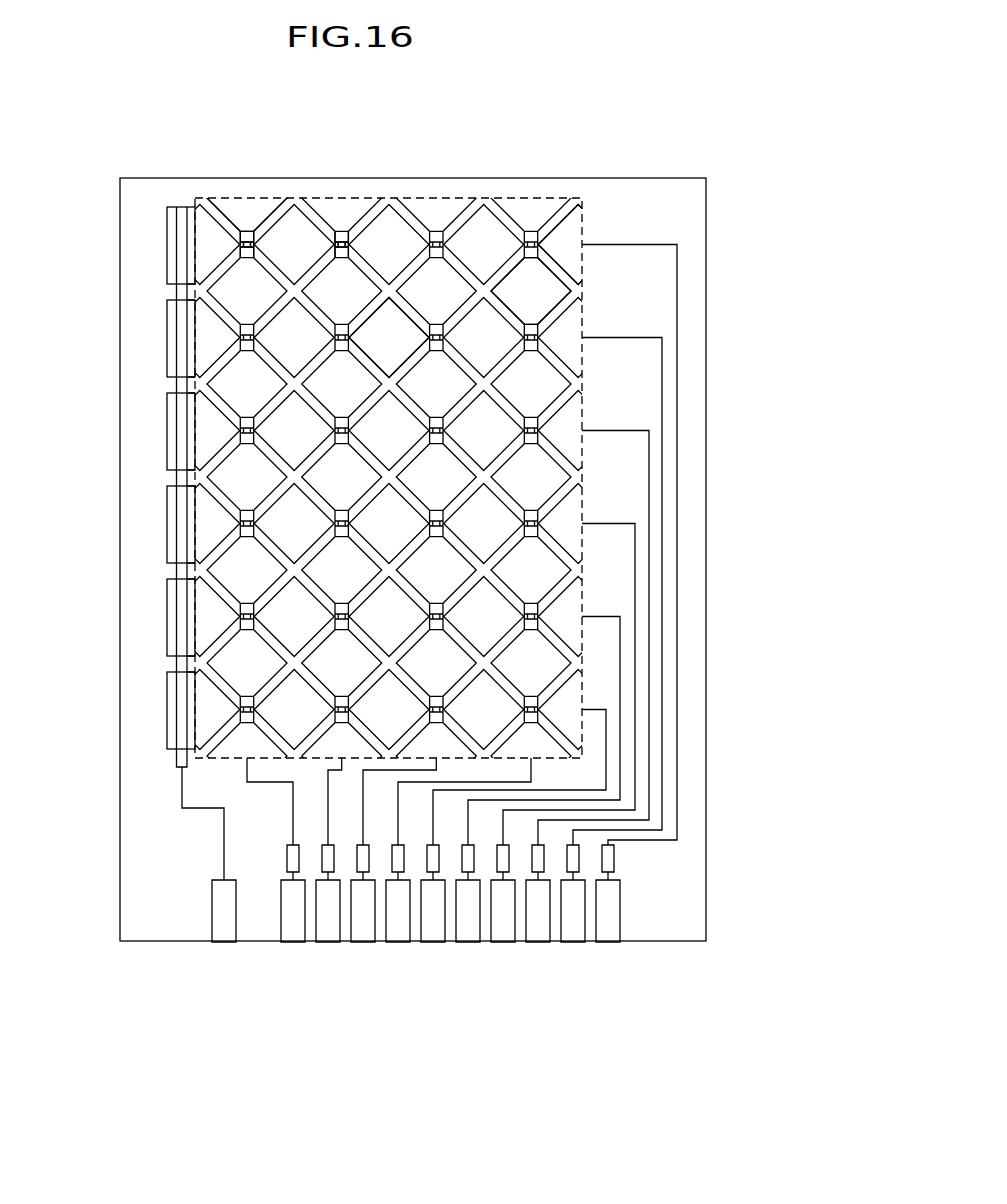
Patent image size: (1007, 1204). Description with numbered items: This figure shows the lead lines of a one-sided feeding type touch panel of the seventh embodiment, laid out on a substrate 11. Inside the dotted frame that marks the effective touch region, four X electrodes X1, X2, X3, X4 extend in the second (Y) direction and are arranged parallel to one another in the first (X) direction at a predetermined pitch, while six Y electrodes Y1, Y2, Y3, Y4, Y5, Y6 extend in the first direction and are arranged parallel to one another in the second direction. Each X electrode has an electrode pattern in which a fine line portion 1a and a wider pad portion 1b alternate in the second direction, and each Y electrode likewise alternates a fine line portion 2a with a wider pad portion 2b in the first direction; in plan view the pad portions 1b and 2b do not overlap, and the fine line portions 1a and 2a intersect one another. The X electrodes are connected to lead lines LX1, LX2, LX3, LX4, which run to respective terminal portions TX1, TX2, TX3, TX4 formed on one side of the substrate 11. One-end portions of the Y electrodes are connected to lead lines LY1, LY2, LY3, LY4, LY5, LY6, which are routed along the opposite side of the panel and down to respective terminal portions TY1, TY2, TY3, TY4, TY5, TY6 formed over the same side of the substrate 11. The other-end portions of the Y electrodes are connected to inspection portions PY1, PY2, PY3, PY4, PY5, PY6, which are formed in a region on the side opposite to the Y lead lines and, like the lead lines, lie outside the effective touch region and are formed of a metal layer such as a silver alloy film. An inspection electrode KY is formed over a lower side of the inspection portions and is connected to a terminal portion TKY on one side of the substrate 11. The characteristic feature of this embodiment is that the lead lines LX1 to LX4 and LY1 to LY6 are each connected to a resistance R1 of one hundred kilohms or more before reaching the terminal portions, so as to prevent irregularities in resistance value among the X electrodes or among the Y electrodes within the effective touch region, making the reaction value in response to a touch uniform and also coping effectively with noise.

The substrate 11 is at (145, 878).
The fine line portion 1a is at (240, 238).
The pad portion 1b is at (540, 288).
The fine line portion 2a is at (336, 237).
The pad portion 2b is at (398, 330).
The X electrode X1 is at (250, 203).
The X electrode X2 is at (345, 203).
The X electrode X3 is at (440, 203).
The X electrode X4 is at (540, 203).
The Y electrode Y1 is at (580, 696).
The Y electrode Y2 is at (580, 606).
The Y electrode Y3 is at (573, 513).
The Y electrode Y4 is at (573, 420).
The Y electrode Y5 is at (573, 328).
The Y electrode Y6 is at (577, 238).
The inspection portion PY1 is at (167, 723).
The inspection portion PY2 is at (167, 600).
The inspection portion PY3 is at (167, 526).
The inspection portion PY4 is at (167, 432).
The inspection portion PY5 is at (167, 340).
The inspection portion PY6 is at (167, 247).
The inspection electrode KY is at (176, 663).
The lead line LX1 is at (262, 784).
The lead line LX2 is at (335, 773).
The lead line LX3 is at (380, 770).
The lead line LX4 is at (422, 782).
The lead line LY1 is at (606, 752).
The lead line LY2 is at (620, 636).
The lead line LY3 is at (635, 548).
The lead line LY4 is at (649, 490).
The lead line LY5 is at (662, 372).
The lead line LY6 is at (677, 288).
The resistance R1 is at (615, 860).
The terminal portion TKY is at (229, 926).
The terminal portion TX1 is at (296, 932).
The terminal portion TX2 is at (331, 932).
The terminal portion TX3 is at (364, 935).
The terminal portion TX4 is at (404, 932).
The terminal portion TY1 is at (431, 933).
The terminal portion TY2 is at (469, 933).
The terminal portion TY3 is at (502, 933).
The terminal portion TY4 is at (537, 933).
The terminal portion TY5 is at (567, 933).
The terminal portion TY6 is at (606, 933).